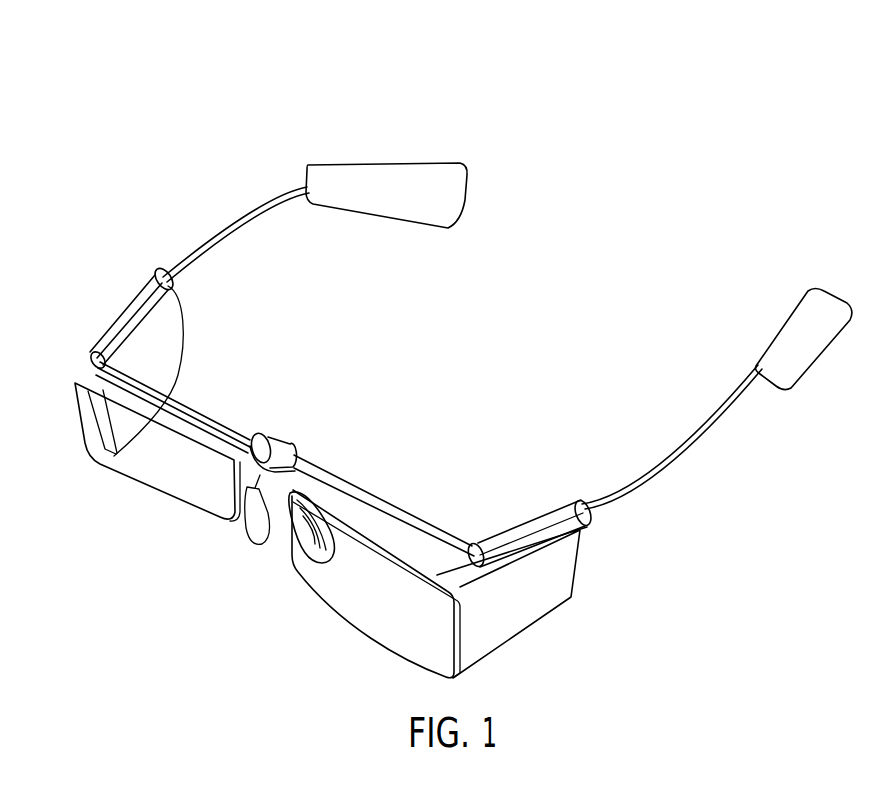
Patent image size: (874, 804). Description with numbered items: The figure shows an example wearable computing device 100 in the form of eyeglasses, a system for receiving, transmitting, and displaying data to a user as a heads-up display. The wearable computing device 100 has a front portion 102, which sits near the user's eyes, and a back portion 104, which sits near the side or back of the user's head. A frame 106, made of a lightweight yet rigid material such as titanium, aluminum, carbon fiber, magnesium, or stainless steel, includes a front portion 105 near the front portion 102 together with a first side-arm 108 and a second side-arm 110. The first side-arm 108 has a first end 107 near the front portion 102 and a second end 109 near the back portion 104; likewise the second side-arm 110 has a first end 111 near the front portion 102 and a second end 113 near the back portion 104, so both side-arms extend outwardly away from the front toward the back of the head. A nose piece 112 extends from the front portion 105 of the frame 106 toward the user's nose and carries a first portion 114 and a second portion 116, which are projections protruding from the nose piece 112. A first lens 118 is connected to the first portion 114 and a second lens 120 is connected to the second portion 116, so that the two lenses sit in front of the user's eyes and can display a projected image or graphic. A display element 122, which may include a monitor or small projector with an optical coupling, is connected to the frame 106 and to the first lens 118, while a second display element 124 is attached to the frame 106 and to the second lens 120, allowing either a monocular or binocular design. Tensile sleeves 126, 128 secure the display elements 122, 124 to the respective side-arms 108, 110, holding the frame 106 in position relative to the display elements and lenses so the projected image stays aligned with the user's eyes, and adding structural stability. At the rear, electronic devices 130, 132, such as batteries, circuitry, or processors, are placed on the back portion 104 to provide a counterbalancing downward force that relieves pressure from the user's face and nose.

The wearable computing device 100 is at (84, 105).
The front portion 102 is at (234, 577).
The back portion 104 is at (722, 270).
The front portion of the frame 105 is at (373, 500).
The frame 106 is at (343, 474).
The first end of the first side-arm 107 is at (83, 330).
The first side-arm 108 is at (203, 245).
The second end of the first side-arm 109 is at (345, 153).
The second side-arm 110 is at (658, 468).
The first end of the second side-arm 111 is at (454, 535).
The nose piece 112 is at (288, 455).
The second end of the second side-arm 113 is at (735, 364).
The first portion of the nose piece 114 is at (242, 437).
The second portion of the nose piece 116 is at (332, 558).
The first lens 118 is at (148, 490).
The second lens 120 is at (388, 628).
The display element 122 is at (170, 357).
The second display element 124 is at (498, 626).
The tensile sleeve 126 is at (157, 283).
The tensile sleeve 128 is at (512, 532).
The electronic device 130 is at (427, 173).
The electronic device 132 is at (795, 368).